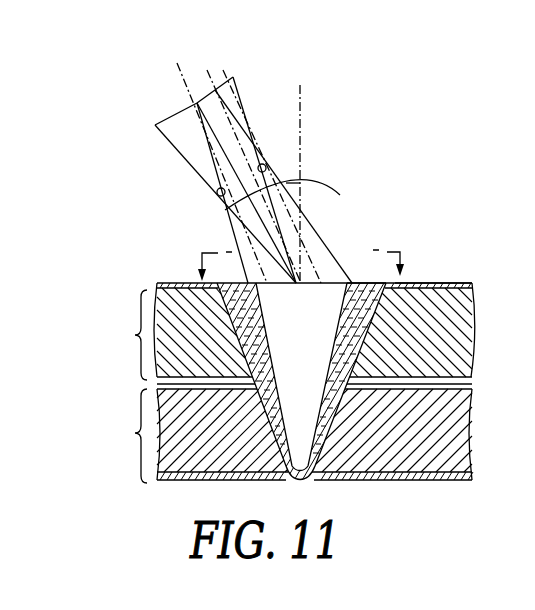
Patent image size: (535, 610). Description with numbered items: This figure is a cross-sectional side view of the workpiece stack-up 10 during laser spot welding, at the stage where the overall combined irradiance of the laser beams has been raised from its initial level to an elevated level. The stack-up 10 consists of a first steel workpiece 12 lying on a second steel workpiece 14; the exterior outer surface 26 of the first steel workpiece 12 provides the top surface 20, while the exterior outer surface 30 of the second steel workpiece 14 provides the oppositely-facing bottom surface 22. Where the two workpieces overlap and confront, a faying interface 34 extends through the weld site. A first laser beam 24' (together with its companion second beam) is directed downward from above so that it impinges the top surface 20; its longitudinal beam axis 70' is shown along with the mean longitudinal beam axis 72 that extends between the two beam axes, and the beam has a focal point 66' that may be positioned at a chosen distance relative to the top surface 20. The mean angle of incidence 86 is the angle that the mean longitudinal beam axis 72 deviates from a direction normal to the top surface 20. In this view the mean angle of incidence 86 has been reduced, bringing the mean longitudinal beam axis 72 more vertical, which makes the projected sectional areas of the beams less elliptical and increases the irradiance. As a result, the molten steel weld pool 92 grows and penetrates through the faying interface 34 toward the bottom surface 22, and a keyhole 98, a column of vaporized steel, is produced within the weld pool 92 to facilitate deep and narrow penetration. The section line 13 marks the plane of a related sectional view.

The workpiece stack-up 10 is at (136, 379).
The first steel workpiece 12 is at (135, 334).
The second steel workpiece 14 is at (135, 433).
The top surface 20 is at (428, 282).
The bottom surface 22 is at (366, 481).
The exterior outer surface 26 is at (467, 282).
The exterior outer surface 30 is at (437, 481).
The faying interface 34 is at (230, 395).
The molten steel weld pool 92 is at (248, 319).
The keyhole 98 is at (317, 313).
The section line 13 is at (304, 255).
The first working laser beam 24' is at (274, 162).
The longitudinal beam axis 70' is at (272, 176).
The focal point 66' is at (304, 141).
The mean angle of incidence 86 is at (288, 183).
The mean longitudinal beam axis 72 is at (293, 207).